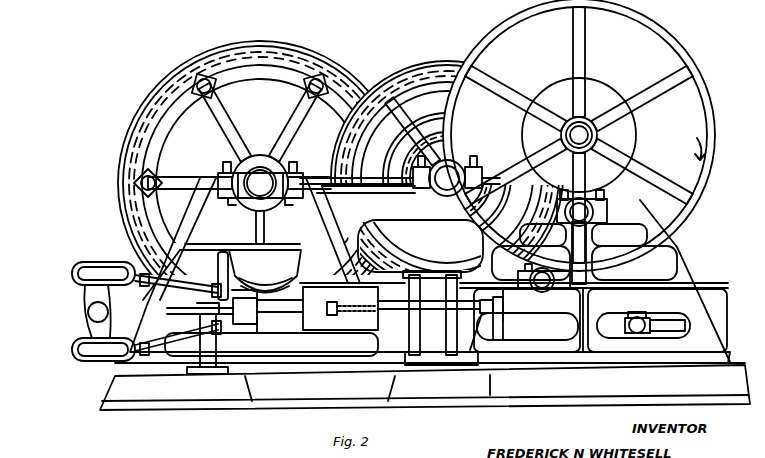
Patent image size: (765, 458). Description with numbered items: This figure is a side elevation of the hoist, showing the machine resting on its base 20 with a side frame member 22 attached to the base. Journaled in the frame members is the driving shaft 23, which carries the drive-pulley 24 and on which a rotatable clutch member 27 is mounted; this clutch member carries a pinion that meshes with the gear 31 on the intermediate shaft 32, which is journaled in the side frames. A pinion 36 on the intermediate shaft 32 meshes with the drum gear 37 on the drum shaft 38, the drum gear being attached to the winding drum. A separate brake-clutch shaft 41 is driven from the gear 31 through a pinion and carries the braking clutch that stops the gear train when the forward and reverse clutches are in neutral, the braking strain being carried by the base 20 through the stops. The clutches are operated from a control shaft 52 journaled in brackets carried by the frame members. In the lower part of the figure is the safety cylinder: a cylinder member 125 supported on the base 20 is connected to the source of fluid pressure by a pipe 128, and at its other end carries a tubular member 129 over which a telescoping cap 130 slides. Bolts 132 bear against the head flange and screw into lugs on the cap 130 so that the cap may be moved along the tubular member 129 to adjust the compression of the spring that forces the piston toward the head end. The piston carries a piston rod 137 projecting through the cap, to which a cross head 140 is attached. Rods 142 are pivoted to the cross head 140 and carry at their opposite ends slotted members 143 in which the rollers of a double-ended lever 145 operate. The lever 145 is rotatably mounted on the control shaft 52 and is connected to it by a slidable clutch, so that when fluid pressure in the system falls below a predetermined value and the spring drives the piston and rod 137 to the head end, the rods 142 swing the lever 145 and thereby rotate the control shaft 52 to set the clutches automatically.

The base 20 is at (425, 386).
The side frame member 22 is at (430, 271).
The driving shaft 23 is at (592, 135).
The drive-pulley 24 is at (584, 37).
The rotatable clutch member 27 is at (579, 135).
The gear 31 is at (413, 73).
The intermediate shaft 32 is at (438, 196).
The pinion 36 is at (468, 135).
The drum gear 37 is at (246, 47).
The drum shaft 38 is at (260, 183).
The brake-clutch shaft 41 is at (536, 288).
The control shaft 52 is at (88, 313).
The cylinder member 125 is at (442, 315).
The pipe 128 is at (484, 321).
The tubular member 129 is at (429, 313).
The telescoping cap 130 is at (340, 308).
The bolts 132 is at (353, 315).
The piston rod 137 is at (273, 290).
The cross head 140 is at (252, 333).
The rods 142 is at (180, 284).
The slotted members 143 is at (105, 264).
The double-ended lever 145 is at (86, 292).